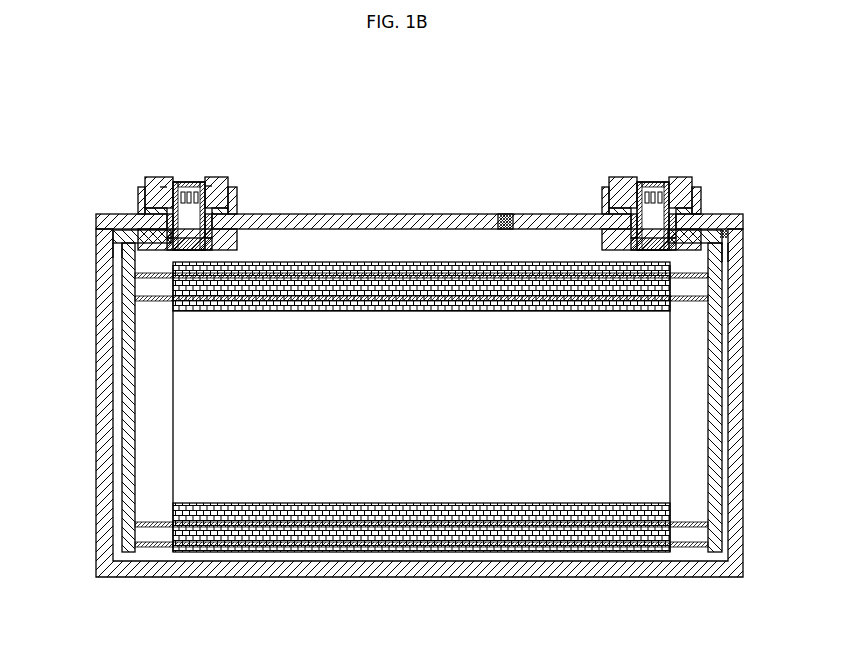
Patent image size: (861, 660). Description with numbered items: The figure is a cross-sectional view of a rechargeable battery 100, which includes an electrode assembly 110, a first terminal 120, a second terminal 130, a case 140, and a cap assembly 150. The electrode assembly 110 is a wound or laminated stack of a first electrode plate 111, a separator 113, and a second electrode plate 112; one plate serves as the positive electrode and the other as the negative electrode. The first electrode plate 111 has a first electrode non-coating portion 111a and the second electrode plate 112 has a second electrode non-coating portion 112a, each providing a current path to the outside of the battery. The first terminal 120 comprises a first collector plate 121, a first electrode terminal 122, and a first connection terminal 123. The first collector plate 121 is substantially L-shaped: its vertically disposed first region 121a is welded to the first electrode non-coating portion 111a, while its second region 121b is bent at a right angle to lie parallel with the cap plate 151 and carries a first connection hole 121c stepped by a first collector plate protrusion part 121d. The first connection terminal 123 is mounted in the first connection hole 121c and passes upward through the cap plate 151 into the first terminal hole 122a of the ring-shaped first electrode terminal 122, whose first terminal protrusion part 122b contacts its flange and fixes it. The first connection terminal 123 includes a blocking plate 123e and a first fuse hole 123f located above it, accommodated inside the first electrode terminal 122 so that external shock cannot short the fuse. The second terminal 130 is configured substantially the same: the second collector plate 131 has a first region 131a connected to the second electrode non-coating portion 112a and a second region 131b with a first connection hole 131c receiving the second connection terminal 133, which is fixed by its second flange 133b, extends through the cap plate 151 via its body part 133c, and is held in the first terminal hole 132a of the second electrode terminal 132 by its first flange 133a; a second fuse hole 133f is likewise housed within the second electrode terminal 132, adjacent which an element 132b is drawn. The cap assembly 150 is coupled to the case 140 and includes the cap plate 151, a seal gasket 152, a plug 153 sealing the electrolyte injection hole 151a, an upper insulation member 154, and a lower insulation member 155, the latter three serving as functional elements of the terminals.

The rechargeable battery 100 is at (744, 67).
The electrode assembly 110 is at (425, 446).
The first electrode plate 111 is at (577, 548).
The first electrode non-coating portion 111a is at (697, 548).
The second electrode plate 112 is at (303, 548).
The second electrode non-coating portion 112a is at (153, 548).
The separator 113 is at (437, 530).
The first terminal 120 is at (673, 178).
The first collector plate 121 is at (743, 370).
The first region 121a is at (715, 462).
The second region 121b is at (722, 264).
The first connection hole 121c is at (735, 277).
The first collector plate protrusion part 121d is at (724, 229).
The first electrode terminal 122 is at (688, 185).
The first terminal hole 122a is at (660, 180).
The first terminal protrusion part 122b is at (700, 196).
The first connection terminal 123 is at (640, 181).
The blocking plate 123e is at (611, 240).
The first fuse hole 123f is at (610, 195).
The second terminal 130 is at (176, 175).
The second collector plate 131 is at (97, 386).
The first region 131a is at (128, 462).
The second region 131b is at (108, 233).
The first connection hole 131c is at (126, 266).
The second electrode terminal 132 is at (226, 185).
The first terminal hole 132a is at (195, 181).
The second terminal plate flange 132b is at (140, 195).
The second connection terminal 133 is at (176, 181).
The first flange 133a is at (207, 186).
The second flange 133b is at (211, 243).
The body part 133c is at (143, 210).
The second fuse hole 133f is at (163, 185).
The case 140 is at (745, 508).
The cap assembly 150 is at (404, 199).
The cap plate 151 is at (393, 217).
The electrolyte injection hole 151a is at (498, 230).
The seal gasket 152 is at (145, 232).
The plug 153 is at (505, 214).
The upper insulation member 154 is at (701, 215).
The lower insulation member 155 is at (737, 238).